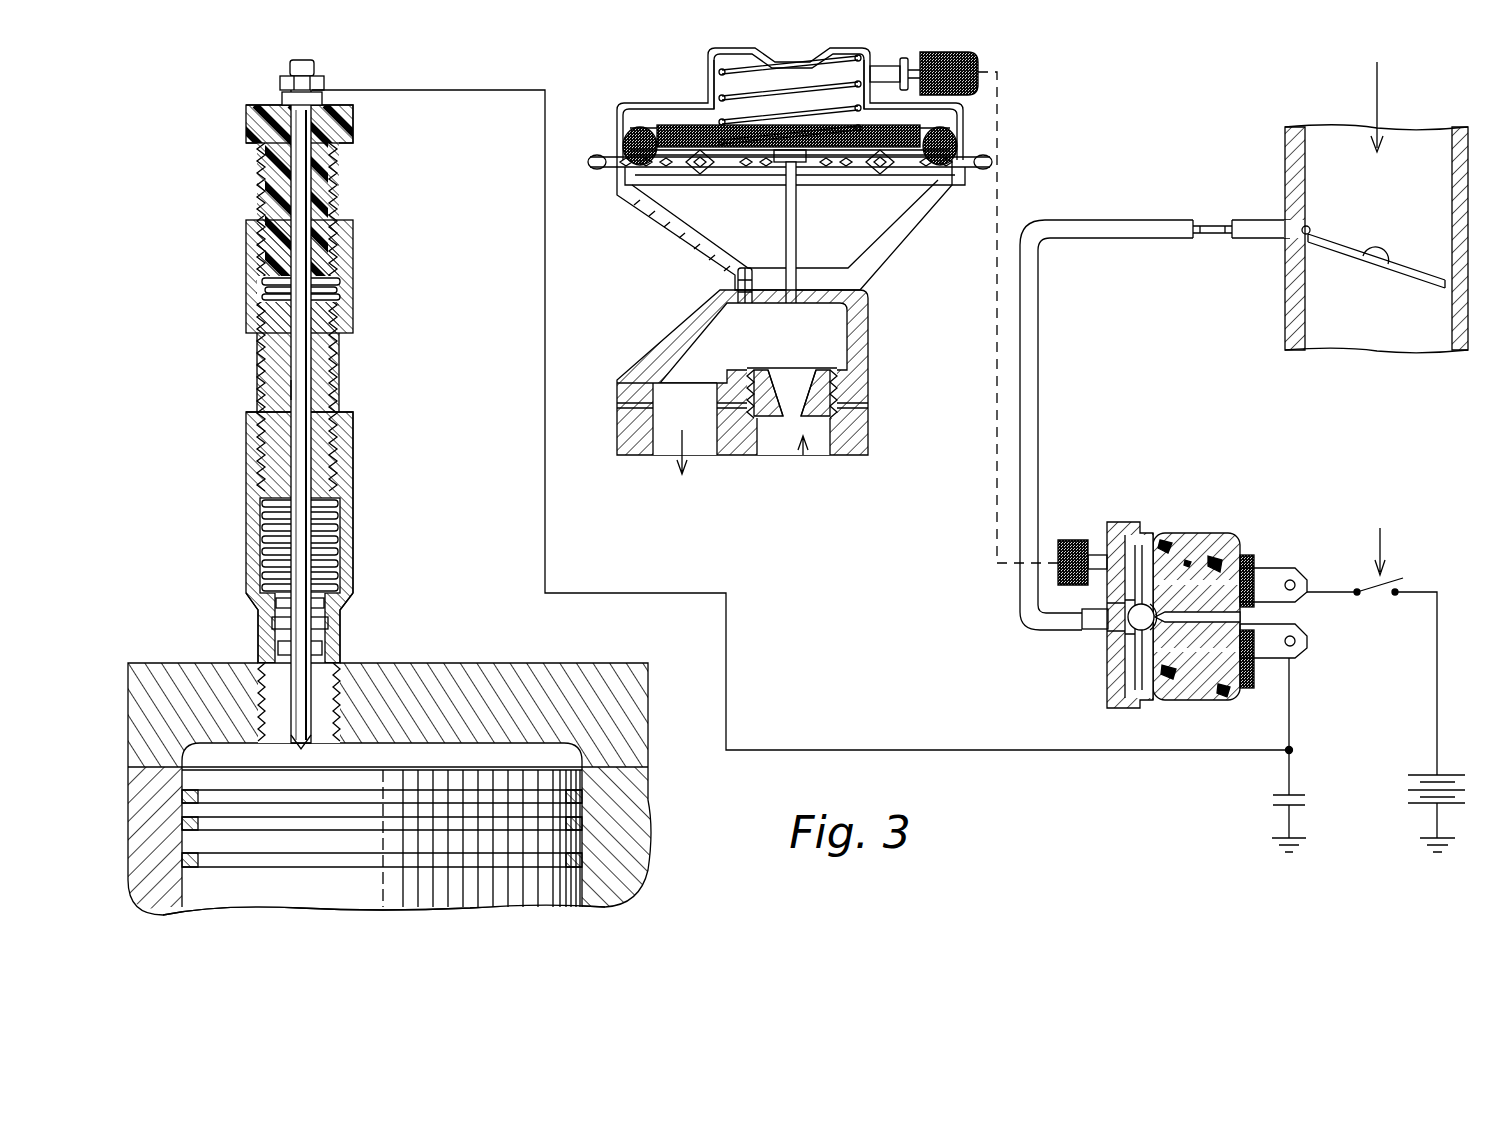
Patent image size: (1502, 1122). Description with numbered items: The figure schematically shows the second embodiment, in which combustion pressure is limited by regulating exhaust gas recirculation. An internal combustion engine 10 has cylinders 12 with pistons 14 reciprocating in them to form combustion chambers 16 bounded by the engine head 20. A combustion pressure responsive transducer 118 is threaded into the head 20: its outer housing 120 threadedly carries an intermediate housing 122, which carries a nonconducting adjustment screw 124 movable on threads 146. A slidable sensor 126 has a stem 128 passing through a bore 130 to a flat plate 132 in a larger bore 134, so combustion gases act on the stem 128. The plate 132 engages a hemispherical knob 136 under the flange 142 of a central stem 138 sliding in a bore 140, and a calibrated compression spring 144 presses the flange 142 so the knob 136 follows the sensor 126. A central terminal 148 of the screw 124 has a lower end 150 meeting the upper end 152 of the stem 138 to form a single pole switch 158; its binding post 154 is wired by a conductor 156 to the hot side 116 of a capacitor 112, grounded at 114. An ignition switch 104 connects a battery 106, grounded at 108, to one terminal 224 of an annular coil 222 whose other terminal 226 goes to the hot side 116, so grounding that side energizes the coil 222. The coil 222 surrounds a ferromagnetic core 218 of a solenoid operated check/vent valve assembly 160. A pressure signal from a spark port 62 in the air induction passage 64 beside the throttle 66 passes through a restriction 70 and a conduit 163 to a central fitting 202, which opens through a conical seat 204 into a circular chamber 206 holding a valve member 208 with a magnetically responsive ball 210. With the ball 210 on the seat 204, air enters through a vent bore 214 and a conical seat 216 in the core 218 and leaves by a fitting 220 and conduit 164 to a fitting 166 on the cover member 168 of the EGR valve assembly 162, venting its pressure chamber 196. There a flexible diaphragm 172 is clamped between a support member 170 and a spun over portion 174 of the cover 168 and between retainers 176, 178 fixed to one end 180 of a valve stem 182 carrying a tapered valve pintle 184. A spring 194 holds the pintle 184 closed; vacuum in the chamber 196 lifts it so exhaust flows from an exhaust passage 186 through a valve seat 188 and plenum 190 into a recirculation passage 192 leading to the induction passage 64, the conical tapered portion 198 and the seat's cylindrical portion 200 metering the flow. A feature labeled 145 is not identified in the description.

The internal combustion engine 10 is at (663, 811).
The cylinders 12 is at (182, 886).
The pistons 14 is at (200, 782).
The combustion chambers 16 is at (565, 757).
The engine head 20 is at (552, 668).
The spark port 62 is at (1308, 232).
The air induction passage 64 is at (1376, 224).
The throttle 66 is at (1365, 250).
The restriction 70 is at (1218, 226).
The ignition switch 104 is at (1405, 582).
The electrical source 106 is at (1455, 776).
The ground 108 is at (1445, 840).
The capacitor 112 is at (1298, 797).
The ground 114 is at (1298, 840).
The hot side of capacitor 116 is at (1292, 750).
The combustion pressure responsive transducer 118 is at (310, 407).
The outer housing 120 is at (342, 592).
The intermediate housing 122 is at (328, 384).
The nonconducting adjustment screw 124 is at (330, 193).
The sensor 126 is at (323, 723).
The stem 128 is at (304, 746).
The bore 130 is at (293, 712).
The flat plate 132 is at (285, 665).
The larger bore 134 is at (278, 602).
The hemispherical knob 136 is at (300, 638).
The central stem 138 is at (282, 456).
The bore 140 is at (292, 392).
The flange 142 is at (290, 620).
The calibrated compression spring 144 is at (268, 548).
The bore 145 is at (338, 447).
The threads 146 is at (328, 242).
The central terminal 148 is at (290, 127).
The lower end 150 is at (290, 292).
The upper end 152 is at (305, 300).
The binding post 154 is at (292, 80).
The conductor 156 is at (545, 556).
The single pole switch 158 is at (338, 286).
The solenoid operated check/vent valve assembly 160 is at (1168, 592).
The exhaust gas recirculation valve assembly 162 is at (814, 227).
The conduit 163 is at (1030, 338).
The conduit 164 is at (1000, 215).
The fitting 166 is at (905, 72).
The cover member 168 is at (848, 50).
The support member 170 is at (958, 185).
The flexible circular diaphragm 172 is at (960, 122).
The spun over portion 174 is at (988, 162).
The retainer 176 is at (615, 172).
The retainer 178 is at (700, 172).
The end of valve stem 180 is at (780, 165).
The valve stem 182 is at (786, 228).
The tapered valve pintle 184 is at (804, 395).
The exhaust passage 186 is at (818, 447).
The valve seat 188 is at (840, 392).
The plenum 190 is at (767, 401).
The recirculation passage 192 is at (658, 440).
The spring 194 is at (742, 70).
The pressure chamber 196 is at (725, 82).
The conical tapered portion 198 is at (776, 430).
The cylindrical portion 200 is at (772, 402).
The central fitting 202 is at (1078, 622).
The conical seat 204 is at (1128, 612).
The circular chamber 206 is at (1137, 685).
The valve member 208 is at (1135, 662).
The magnetically responsive metallic ball 210 is at (1122, 642).
The vent bore 214 is at (1225, 650).
The conical seat 216 is at (1215, 617).
The ferromagnetic core 218 is at (1257, 590).
The fitting 220 is at (1100, 556).
The annular coil 222 is at (1150, 540).
The external terminal 224 is at (1395, 576).
The external terminal 226 is at (1302, 648).